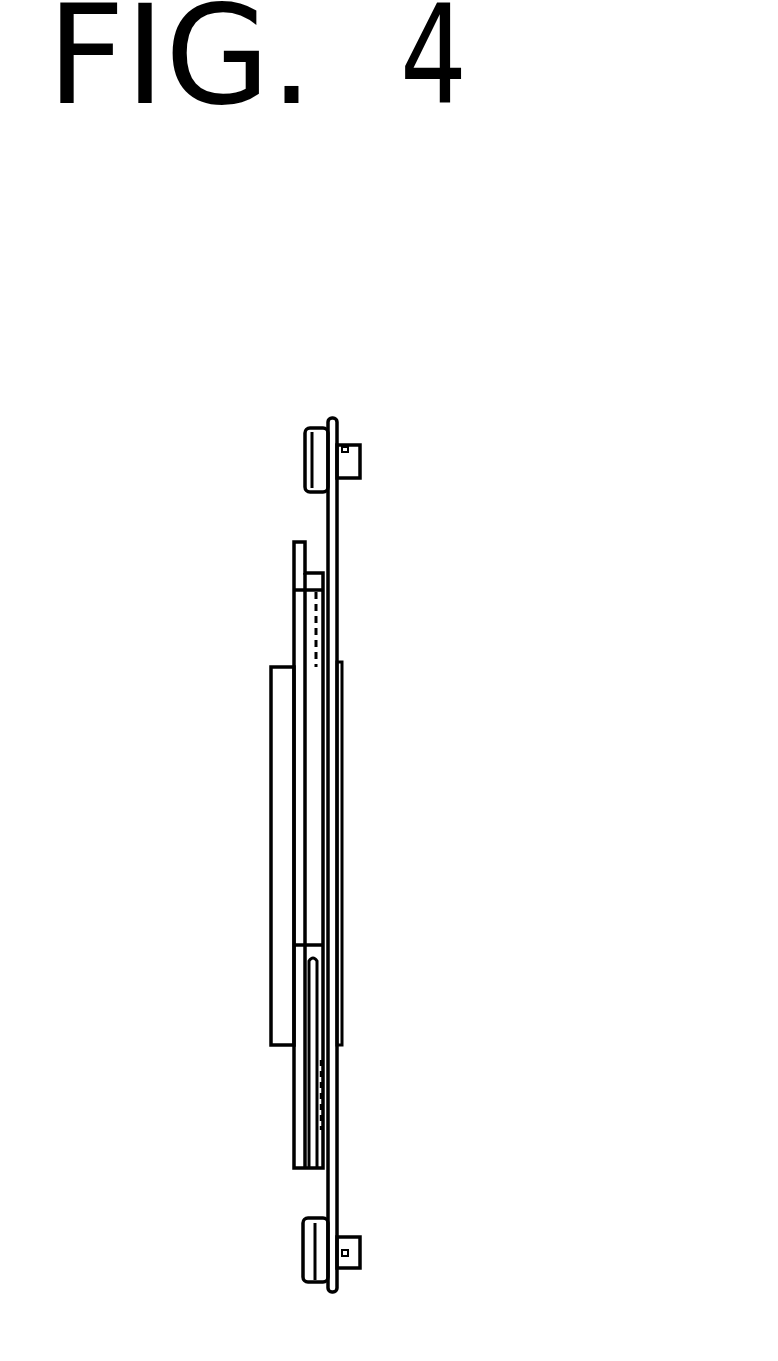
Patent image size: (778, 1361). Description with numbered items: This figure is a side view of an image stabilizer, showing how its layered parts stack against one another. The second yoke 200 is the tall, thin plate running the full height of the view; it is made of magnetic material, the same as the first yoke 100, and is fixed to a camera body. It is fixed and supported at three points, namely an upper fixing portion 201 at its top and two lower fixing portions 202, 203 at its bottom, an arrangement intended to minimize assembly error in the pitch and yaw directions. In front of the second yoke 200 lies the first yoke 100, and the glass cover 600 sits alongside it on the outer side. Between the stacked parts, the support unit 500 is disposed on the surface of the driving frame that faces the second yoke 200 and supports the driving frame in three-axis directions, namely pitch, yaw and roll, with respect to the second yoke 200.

The first yoke 100 is at (294, 548).
The second yoke 200 is at (338, 518).
The upper fixing portion 201 is at (362, 444).
The lower fixing portion 202 is at (495, 1254).
The lower fixing portion 203 is at (360, 1243).
The support unit 500 is at (338, 611).
The glass cover 600 is at (271, 710).